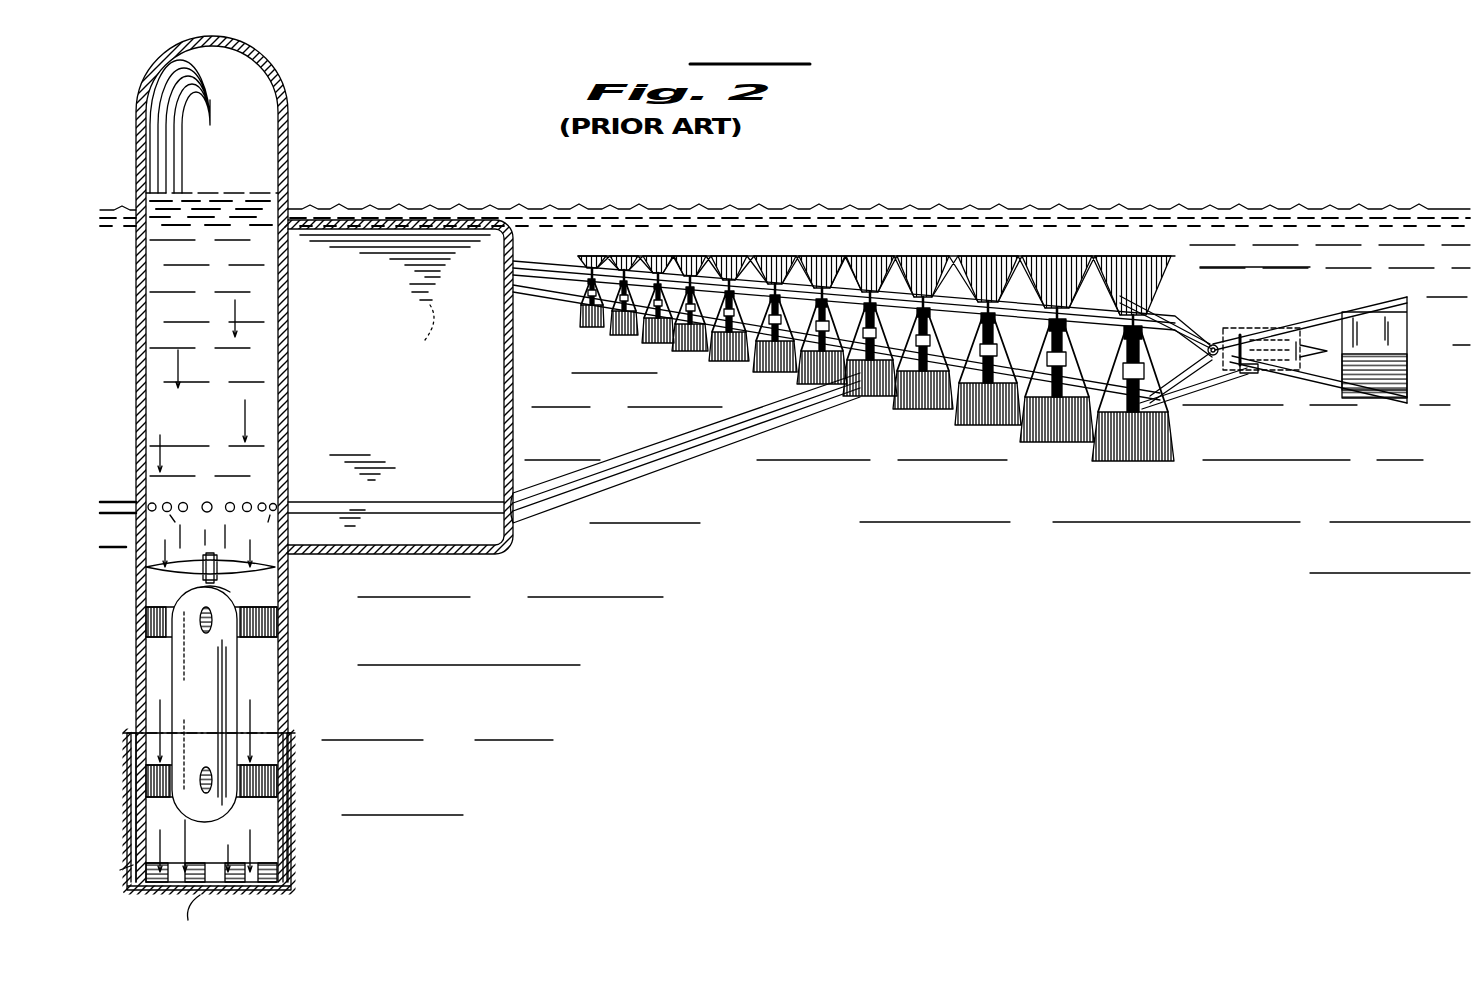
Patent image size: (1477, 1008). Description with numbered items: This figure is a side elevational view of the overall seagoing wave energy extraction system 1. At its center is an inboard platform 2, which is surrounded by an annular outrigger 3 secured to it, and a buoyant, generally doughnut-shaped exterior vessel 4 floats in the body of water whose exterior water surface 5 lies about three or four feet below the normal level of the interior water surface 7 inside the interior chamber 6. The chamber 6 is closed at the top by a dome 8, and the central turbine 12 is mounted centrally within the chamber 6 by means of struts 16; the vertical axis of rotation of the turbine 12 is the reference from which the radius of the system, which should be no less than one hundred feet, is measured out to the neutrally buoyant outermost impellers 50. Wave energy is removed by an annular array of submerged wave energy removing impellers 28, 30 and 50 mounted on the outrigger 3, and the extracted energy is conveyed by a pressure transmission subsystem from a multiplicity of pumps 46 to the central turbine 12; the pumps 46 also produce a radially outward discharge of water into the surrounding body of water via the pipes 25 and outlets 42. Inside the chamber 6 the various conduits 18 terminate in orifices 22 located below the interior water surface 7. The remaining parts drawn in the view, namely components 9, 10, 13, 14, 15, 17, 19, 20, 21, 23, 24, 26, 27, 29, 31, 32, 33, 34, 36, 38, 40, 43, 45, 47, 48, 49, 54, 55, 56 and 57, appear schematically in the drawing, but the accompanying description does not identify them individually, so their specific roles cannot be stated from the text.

The overall seagoing wave energy extraction system 1 is at (430, 152).
The inboard platform 2 is at (318, 208).
The annular outrigger 3 is at (752, 216).
The exterior vessel 4 is at (450, 216).
The exterior water surface 5 is at (1098, 192).
The interior chamber 6 is at (289, 372).
The interior water surface 7 is at (214, 196).
The dome 8 is at (286, 76).
The base 9 is at (310, 845).
The lower housing 10 is at (288, 712).
The central turbine 12 is at (265, 567).
The nozzle assembly 13 is at (935, 250).
The motor 14 is at (215, 692).
The nozzle assembly 15 is at (960, 256).
The struts 16 is at (266, 624).
The nozzle assembly 17 is at (985, 256).
The conduits 18 is at (405, 508).
The upper duct 19 is at (520, 262).
The upper rail 20 is at (552, 262).
The strut 21 is at (1230, 380).
The orifices 22 is at (232, 498).
The support strut 23 is at (725, 428).
The inlet header 24 is at (527, 255).
The pipes 25 is at (530, 293).
The inlet cone 26 is at (1000, 262).
The outlet 27 is at (667, 336).
The wave energy removing impellers 28 is at (632, 250).
The throat 29 is at (1047, 353).
The wave energy removing impellers 30 is at (613, 328).
The axis 31 is at (1037, 447).
The outlet opening 32 is at (953, 423).
The diffuser cone 33 is at (750, 347).
The inlet opening 34 is at (795, 252).
The throat section 36 is at (877, 343).
The horn 38 is at (1210, 275).
The diffuser 40 is at (1148, 470).
The outlets 42 is at (683, 340).
The link 43 is at (1185, 326).
The strut 45 is at (1180, 380).
The pumps 46 is at (600, 310).
The arm 47 is at (1308, 318).
The pivot 48 is at (1228, 342).
The hinge block 49 is at (1250, 336).
The outermost impellers 50 is at (1378, 288).
The nozzle tip 54 is at (1325, 346).
The bracket 55 is at (1250, 368).
The link 56 is at (1165, 318).
The bracket 57 is at (1246, 373).